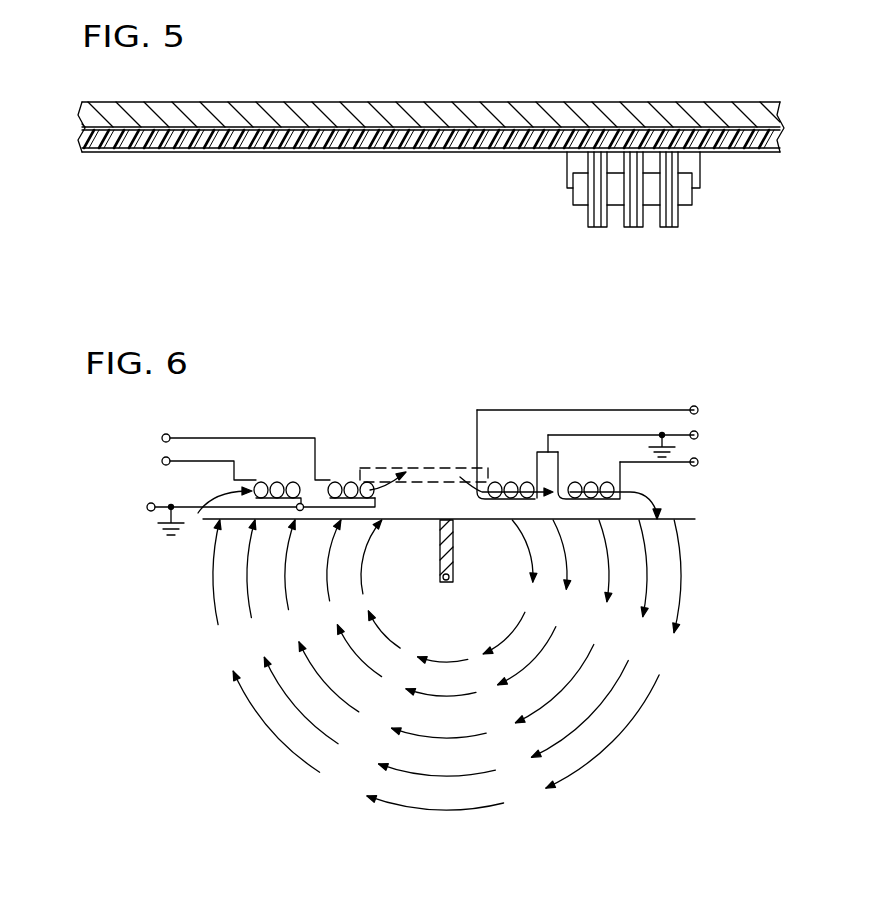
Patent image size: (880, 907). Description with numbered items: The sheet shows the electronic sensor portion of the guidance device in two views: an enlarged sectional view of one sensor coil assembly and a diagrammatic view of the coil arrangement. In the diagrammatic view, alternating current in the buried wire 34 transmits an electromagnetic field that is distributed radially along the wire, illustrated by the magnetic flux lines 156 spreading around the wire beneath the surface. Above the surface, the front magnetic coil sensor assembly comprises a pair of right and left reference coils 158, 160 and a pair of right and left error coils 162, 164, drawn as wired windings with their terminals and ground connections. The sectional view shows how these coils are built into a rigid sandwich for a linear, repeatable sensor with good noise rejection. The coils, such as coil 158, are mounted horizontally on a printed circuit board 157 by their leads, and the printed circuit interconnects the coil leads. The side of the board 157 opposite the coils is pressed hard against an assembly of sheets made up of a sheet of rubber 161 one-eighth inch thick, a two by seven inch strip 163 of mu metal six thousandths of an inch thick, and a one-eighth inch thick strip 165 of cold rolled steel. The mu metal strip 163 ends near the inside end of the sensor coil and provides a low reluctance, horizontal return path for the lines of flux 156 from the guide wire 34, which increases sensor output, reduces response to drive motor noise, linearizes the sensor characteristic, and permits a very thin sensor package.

In FIG. 6, the buried wire 34 is at (455, 581).
In FIG. 6, the magnetic flux lines 156 is at (398, 472).
In FIG. 5, the printed circuit board 157 is at (397, 153).
In FIG. 6, the right reference coil 158 is at (340, 479).
In FIG. 6, the left reference coil 160 is at (492, 483).
In FIG. 5, the sheet of rubber 161 is at (710, 135).
In FIG. 6, the right error coil 162 is at (280, 480).
In FIG. 5, the strip of mu metal 163 is at (354, 128).
In FIG. 6, the left error coil 164 is at (590, 485).
In FIG. 5, the strip of cold rolled steel 165 is at (471, 110).